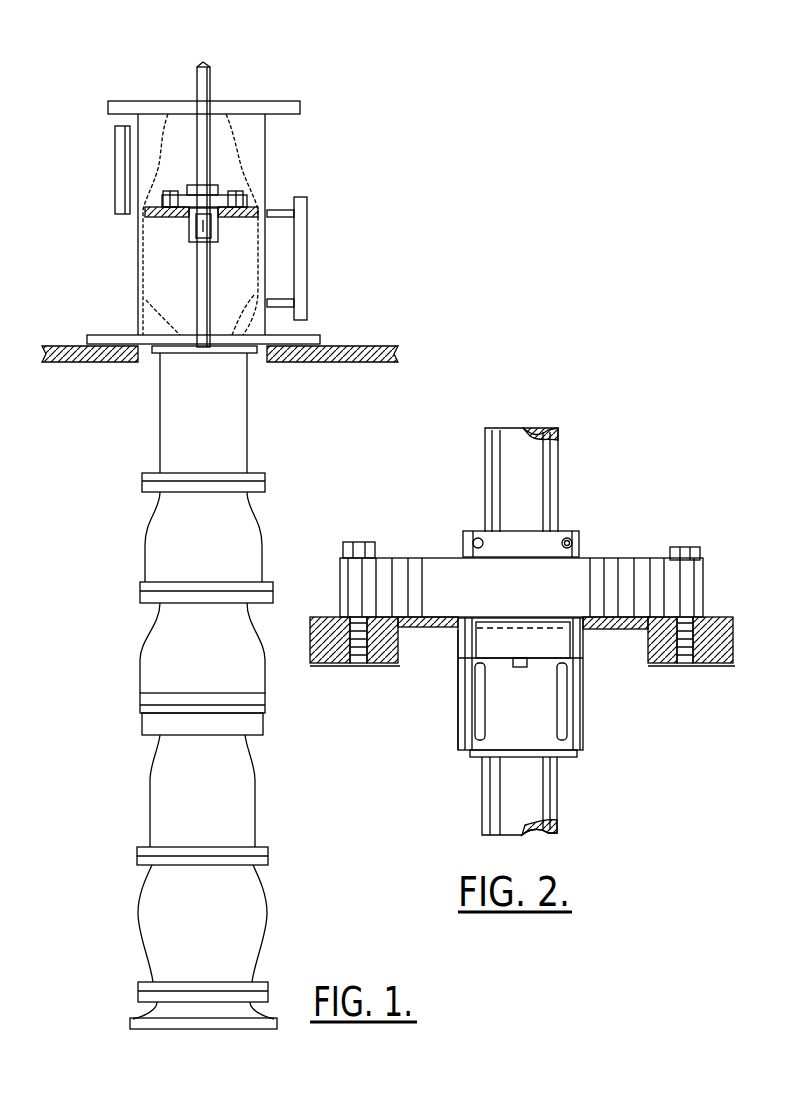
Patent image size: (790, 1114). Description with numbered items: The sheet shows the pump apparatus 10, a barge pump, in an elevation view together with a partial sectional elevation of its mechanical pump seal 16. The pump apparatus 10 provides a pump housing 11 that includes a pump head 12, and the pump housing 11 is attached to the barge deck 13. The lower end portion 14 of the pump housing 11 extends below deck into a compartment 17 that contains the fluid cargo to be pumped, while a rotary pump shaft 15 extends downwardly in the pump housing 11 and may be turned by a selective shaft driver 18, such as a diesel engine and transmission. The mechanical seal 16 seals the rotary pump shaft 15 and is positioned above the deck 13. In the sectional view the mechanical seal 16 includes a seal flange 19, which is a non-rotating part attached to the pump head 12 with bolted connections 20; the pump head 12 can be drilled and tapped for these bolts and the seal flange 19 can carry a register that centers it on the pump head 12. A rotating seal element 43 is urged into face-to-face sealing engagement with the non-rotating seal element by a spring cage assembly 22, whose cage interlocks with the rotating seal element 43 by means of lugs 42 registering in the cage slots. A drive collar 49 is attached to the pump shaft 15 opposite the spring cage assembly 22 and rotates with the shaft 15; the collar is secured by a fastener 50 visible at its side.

In FIG. 1, the pump apparatus 10 is at (365, 98).
In FIG. 1, the pump housing 11 is at (138, 253).
In FIG. 1, the pump head 12 is at (227, 230).
In FIG. 2, the pump head 12 is at (325, 665).
In FIG. 1, the barge deck 13 is at (368, 345).
In FIG. 1, the lower end portion 14 is at (158, 918).
In FIG. 1, the rotary pump shaft 15 is at (210, 50).
In FIG. 2, the rotary pump shaft 15 is at (500, 460).
In FIG. 1, the mechanical pump seal 16 is at (218, 188).
In FIG. 2, the mechanical pump seal 16 is at (388, 457).
In FIG. 1, the compartment 17 is at (112, 603).
In FIG. 1, the shaft driver 18 is at (190, 67).
In FIG. 2, the seal flange 19 is at (447, 572).
In FIG. 2, the bolted connections 20 is at (362, 548).
In FIG. 2, the spring cage assembly 22 is at (537, 712).
In FIG. 2, the lugs 42 is at (518, 657).
In FIG. 2, the rotating seal element 43 is at (457, 643).
In FIG. 2, the drive collar 49 is at (527, 540).
In FIG. 2, the set screw 50 is at (577, 543).